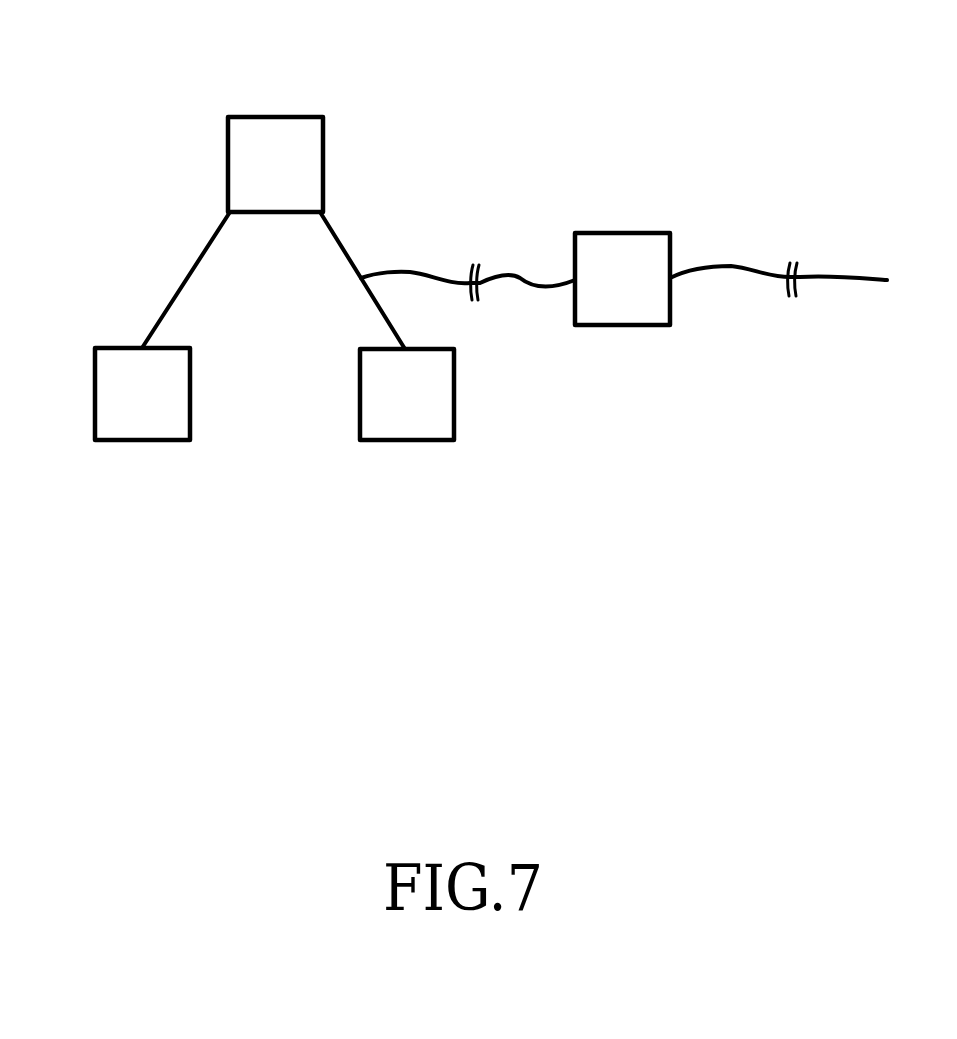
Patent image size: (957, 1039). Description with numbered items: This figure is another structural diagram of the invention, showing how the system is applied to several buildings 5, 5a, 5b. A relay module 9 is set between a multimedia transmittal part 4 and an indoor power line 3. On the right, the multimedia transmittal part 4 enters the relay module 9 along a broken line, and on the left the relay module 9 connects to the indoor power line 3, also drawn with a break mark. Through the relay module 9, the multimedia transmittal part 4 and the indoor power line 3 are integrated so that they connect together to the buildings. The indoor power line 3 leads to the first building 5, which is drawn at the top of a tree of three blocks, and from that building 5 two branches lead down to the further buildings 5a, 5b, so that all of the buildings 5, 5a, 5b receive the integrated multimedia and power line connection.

The indoor power line 3 is at (410, 272).
The multimedia transmittal part 4 is at (731, 266).
The building 5 is at (228, 157).
The building 5a is at (142, 440).
The building 5b is at (407, 440).
The relay module 9 is at (617, 233).